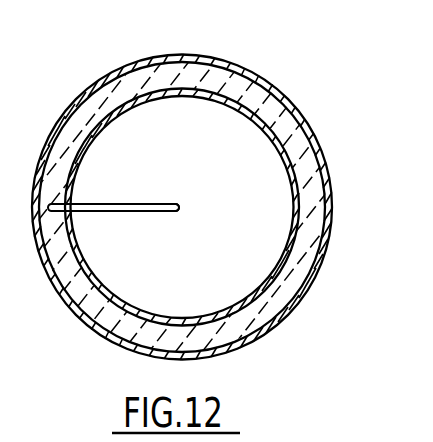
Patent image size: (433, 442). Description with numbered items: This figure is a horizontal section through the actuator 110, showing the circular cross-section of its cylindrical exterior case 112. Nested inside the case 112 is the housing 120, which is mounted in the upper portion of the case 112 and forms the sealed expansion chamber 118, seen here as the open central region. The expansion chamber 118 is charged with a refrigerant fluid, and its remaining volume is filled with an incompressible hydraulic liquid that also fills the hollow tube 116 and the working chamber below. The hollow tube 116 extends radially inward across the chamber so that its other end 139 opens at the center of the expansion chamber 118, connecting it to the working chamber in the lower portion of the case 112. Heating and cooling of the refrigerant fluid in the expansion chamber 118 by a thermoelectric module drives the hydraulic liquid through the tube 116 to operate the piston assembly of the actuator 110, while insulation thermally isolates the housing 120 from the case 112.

The actuator 110 is at (124, 46).
The cylindrical exterior case 112 is at (337, 243).
The hollow tube 116 is at (121, 203).
The sealed expansion chamber 118 is at (227, 135).
The housing 120 is at (300, 129).
The other end of tube 139 is at (179, 204).